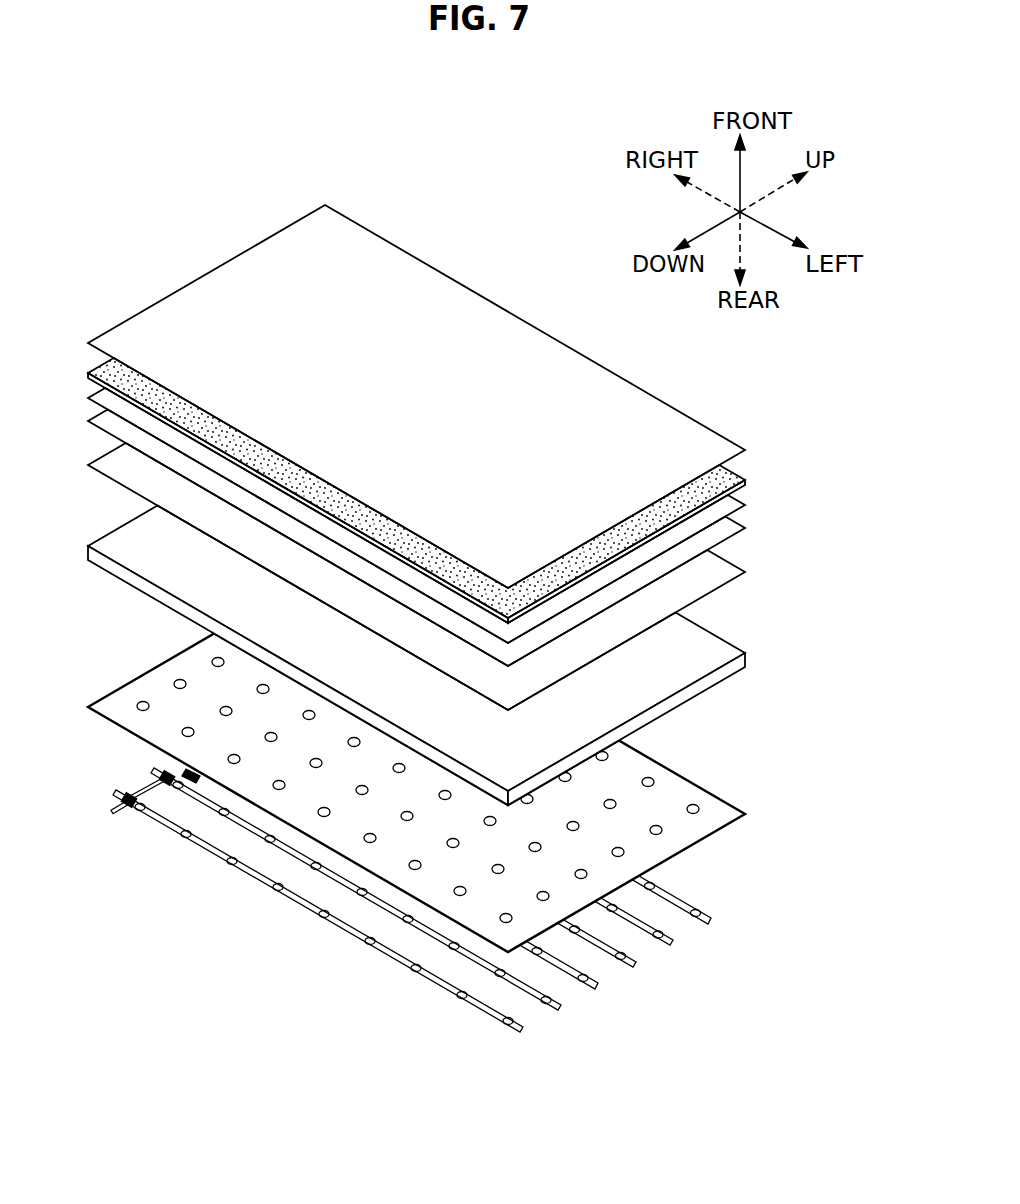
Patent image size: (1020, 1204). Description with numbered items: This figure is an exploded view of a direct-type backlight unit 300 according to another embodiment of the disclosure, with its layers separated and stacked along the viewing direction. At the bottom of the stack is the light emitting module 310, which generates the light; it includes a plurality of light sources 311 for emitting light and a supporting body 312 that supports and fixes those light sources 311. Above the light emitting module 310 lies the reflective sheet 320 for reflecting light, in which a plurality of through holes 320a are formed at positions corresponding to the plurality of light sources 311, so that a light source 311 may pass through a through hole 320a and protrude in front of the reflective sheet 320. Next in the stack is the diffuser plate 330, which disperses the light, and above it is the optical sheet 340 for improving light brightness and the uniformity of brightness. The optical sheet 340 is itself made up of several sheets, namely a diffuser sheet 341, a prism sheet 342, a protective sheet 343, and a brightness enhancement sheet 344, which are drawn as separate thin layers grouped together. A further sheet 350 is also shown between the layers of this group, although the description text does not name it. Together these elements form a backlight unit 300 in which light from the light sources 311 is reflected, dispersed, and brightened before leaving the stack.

The direct-type backlight unit 300 is at (495, 166).
The light emitting module 310 is at (510, 876).
The light source 311 is at (505, 1021).
The supporting body 312 is at (530, 1025).
The reflective sheet 320 is at (498, 793).
The through hole 320a is at (695, 805).
The diffuser plate 330 is at (745, 661).
The optical sheet 340 is at (474, 457).
The diffuser sheet 341 is at (743, 571).
The prism sheet 342 is at (743, 528).
The protective sheet 343 is at (740, 499).
The brightness enhancement sheet 344 is at (837, 578).
The color conversion sheet 350 is at (100, 368).